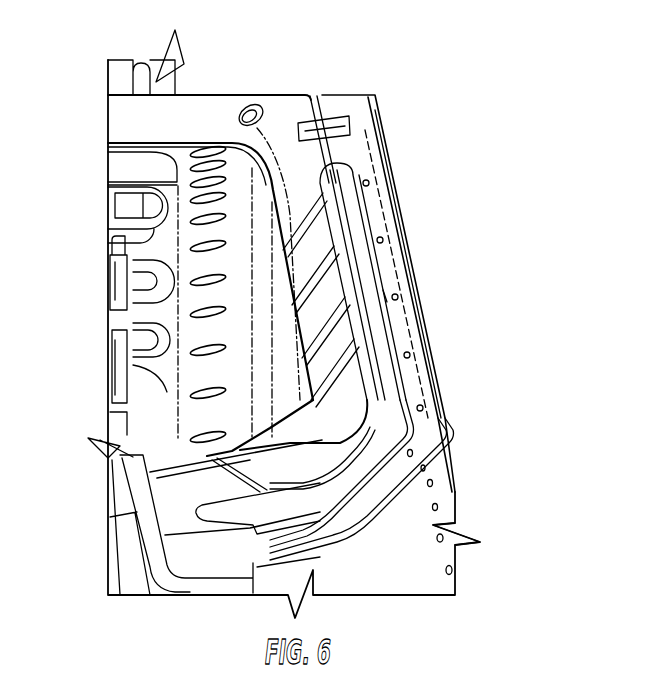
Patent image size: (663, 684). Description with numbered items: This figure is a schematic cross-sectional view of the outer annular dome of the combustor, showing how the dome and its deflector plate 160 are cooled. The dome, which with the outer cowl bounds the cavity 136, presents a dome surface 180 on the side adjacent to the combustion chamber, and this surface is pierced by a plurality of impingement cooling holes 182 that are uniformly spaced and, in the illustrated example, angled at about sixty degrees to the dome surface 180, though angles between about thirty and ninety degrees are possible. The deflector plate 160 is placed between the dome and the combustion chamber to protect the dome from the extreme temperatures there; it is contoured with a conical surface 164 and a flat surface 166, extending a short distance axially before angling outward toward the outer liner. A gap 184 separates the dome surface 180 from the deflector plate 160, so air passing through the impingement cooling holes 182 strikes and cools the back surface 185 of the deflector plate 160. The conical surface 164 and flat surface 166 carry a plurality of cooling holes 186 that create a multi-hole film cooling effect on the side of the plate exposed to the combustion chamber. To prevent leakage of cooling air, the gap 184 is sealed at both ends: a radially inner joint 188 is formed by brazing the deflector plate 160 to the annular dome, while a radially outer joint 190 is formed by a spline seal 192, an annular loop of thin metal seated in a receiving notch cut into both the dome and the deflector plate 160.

The cavity 136 is at (167, 390).
The deflector plate 160 is at (377, 203).
The conical surface 164 is at (427, 543).
The flat surface 166 is at (430, 327).
The dome surface 180 is at (340, 283).
The impingement cooling holes 182 is at (300, 302).
The gap 184 is at (350, 467).
The back surface 185 is at (383, 290).
The cooling holes 186 is at (407, 353).
The radially inner joint 188 is at (196, 542).
The radially outer joint 190 is at (352, 123).
The spline seal 192 is at (322, 128).